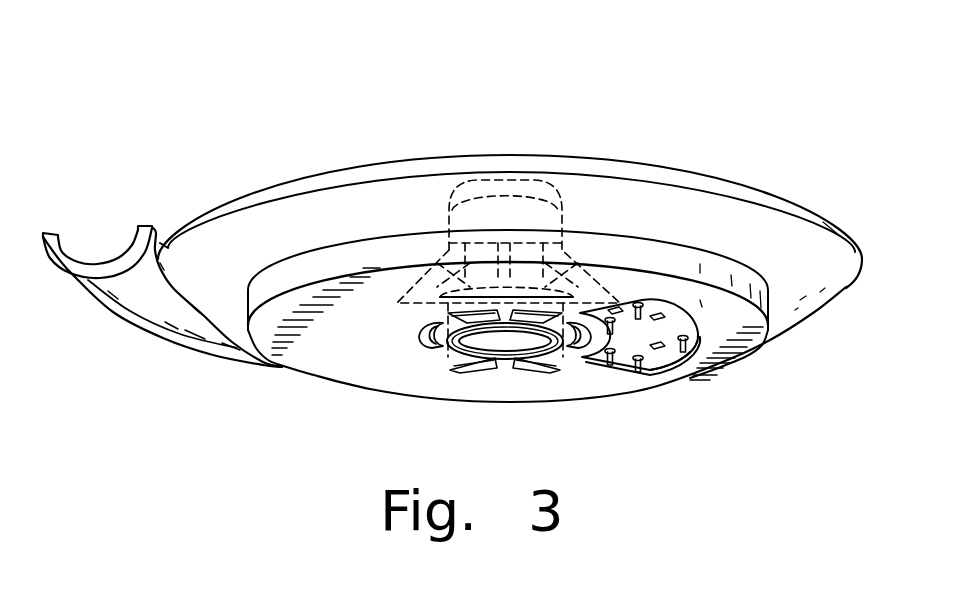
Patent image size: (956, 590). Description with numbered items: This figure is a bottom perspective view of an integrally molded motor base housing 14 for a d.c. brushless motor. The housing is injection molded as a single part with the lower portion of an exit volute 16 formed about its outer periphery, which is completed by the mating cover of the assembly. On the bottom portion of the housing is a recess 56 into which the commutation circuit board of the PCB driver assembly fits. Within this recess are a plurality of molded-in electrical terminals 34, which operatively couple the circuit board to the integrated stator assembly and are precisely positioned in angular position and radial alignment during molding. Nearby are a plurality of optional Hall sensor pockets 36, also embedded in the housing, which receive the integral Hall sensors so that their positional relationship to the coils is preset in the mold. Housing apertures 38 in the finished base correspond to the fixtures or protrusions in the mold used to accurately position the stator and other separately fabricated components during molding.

The motor base housing 14 is at (268, 100).
The exit volute 16 is at (128, 244).
The electrical terminals 34 is at (587, 357).
The Hall sensor pockets 36 is at (622, 303).
The housing apertures 38 is at (424, 346).
The recess 56 is at (658, 364).